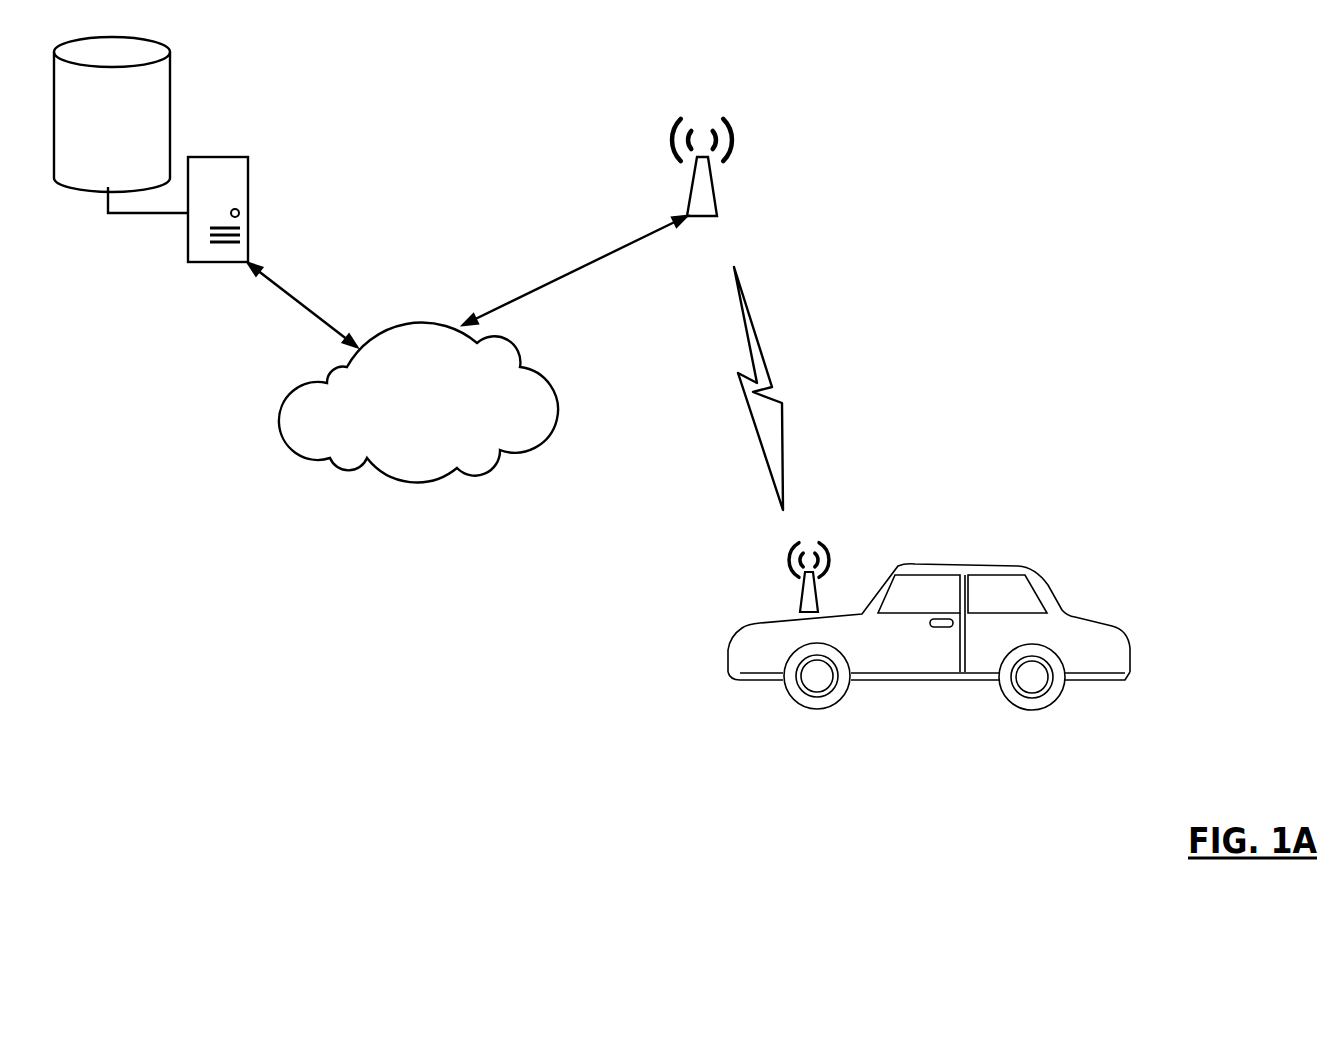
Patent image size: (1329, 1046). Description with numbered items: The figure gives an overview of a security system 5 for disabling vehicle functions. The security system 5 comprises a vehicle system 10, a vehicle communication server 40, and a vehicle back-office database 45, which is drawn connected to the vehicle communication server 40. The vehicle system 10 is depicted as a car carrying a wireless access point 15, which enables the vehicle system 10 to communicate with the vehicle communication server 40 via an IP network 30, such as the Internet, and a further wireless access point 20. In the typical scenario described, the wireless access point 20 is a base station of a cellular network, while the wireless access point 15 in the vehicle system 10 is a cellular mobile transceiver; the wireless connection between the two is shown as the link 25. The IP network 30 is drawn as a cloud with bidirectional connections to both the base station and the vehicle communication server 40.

The security system 5 is at (265, 645).
The vehicle system 10 is at (955, 567).
The wireless access point 15 is at (800, 606).
The wireless access point 20 is at (717, 215).
The wireless communication link 25 is at (770, 387).
The IP network 30 is at (411, 414).
The vehicle communication server 40 is at (222, 157).
The back-office database 45 is at (100, 142).